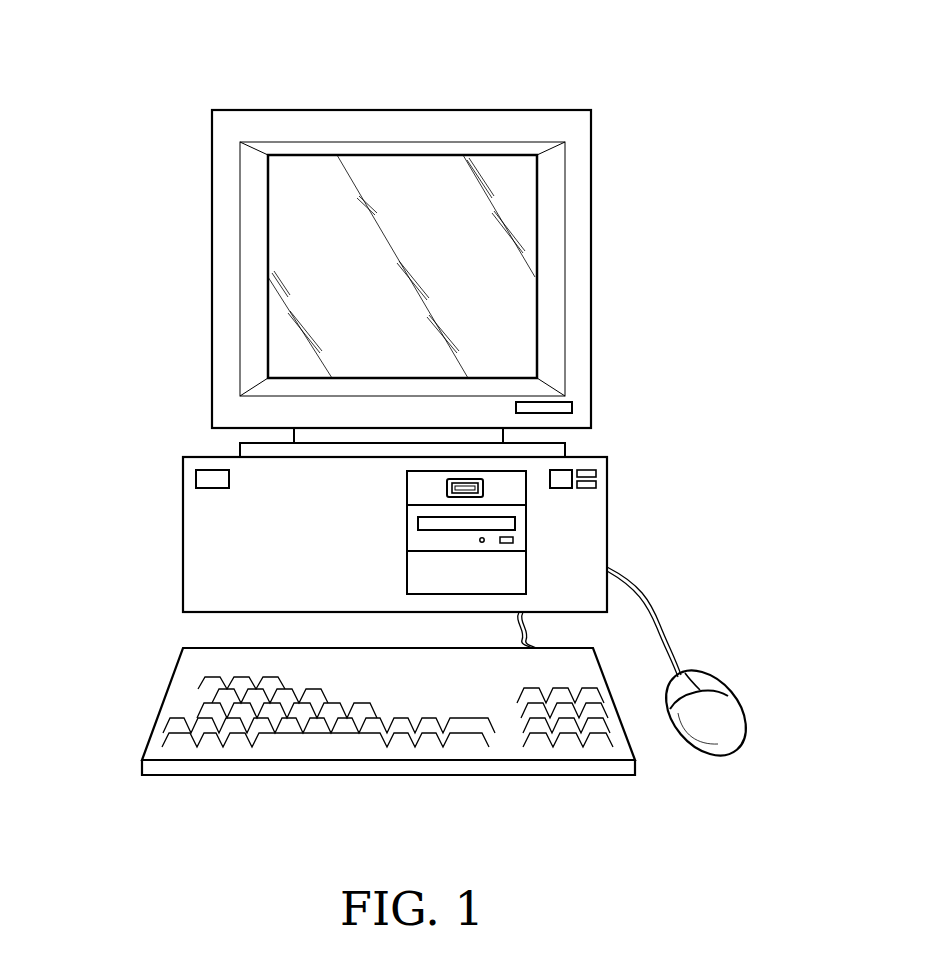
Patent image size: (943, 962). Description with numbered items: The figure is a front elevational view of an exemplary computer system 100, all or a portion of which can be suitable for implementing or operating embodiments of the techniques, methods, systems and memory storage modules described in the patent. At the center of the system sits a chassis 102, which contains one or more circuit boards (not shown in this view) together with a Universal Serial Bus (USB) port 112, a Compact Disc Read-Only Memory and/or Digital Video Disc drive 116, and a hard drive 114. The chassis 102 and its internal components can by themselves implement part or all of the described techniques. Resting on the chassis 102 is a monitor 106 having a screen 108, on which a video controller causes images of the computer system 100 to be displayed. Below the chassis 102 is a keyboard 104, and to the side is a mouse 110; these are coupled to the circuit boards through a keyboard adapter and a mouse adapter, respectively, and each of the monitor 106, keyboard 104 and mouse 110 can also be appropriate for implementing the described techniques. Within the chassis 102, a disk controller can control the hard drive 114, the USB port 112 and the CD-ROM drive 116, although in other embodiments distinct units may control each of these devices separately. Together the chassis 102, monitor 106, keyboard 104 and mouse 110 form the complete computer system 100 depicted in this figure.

The computer system 100 is at (583, 87).
The chassis 102 is at (183, 535).
The keyboard 104 is at (165, 697).
The monitor 106 is at (290, 110).
The screen 108 is at (317, 272).
The mouse 110 is at (723, 705).
The Universal Serial Bus (USB) port 112 is at (483, 485).
The hard drive 114 is at (515, 572).
The Compact Disc Read-Only Memory (CD-ROM) and/or Digital Video Disc (DVD) drive 116 is at (515, 528).